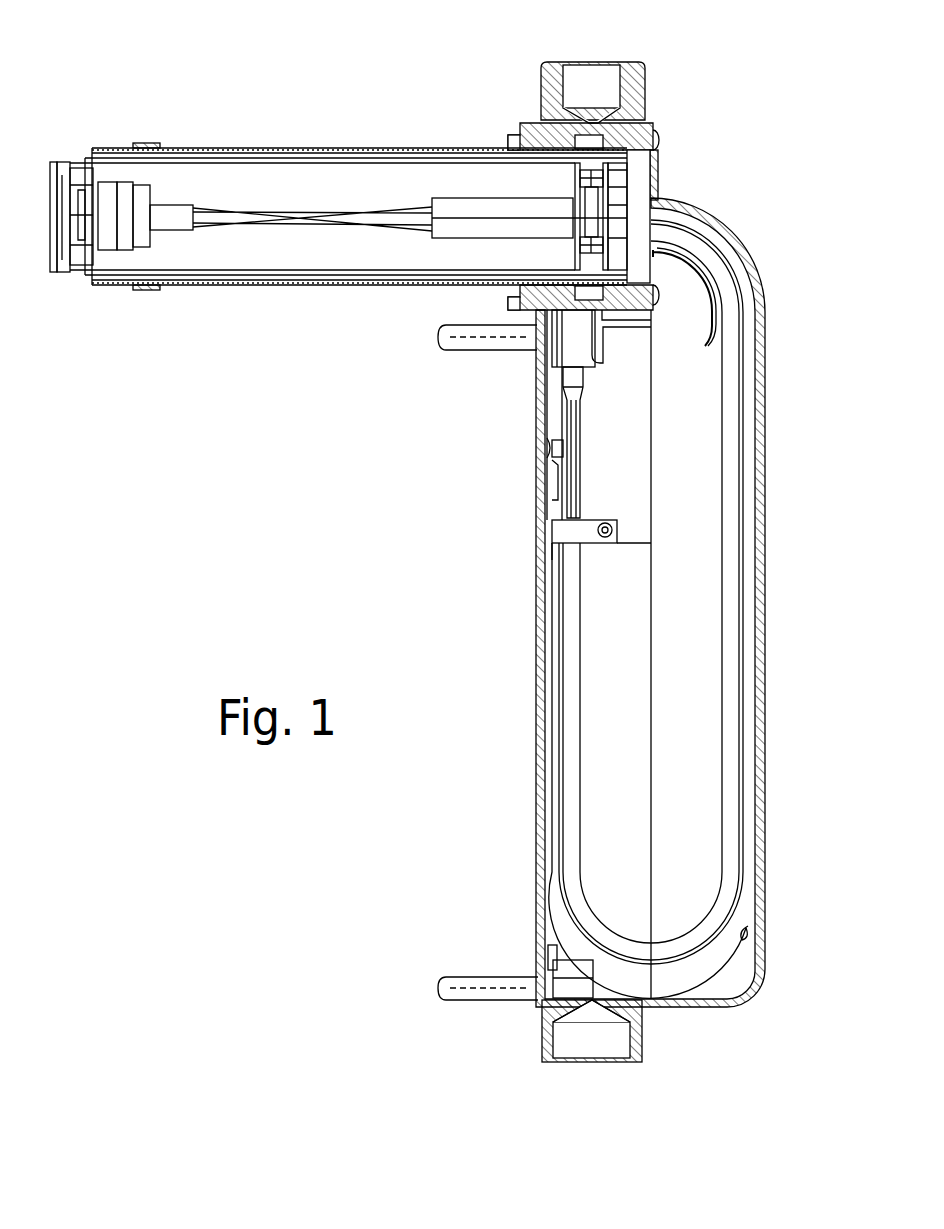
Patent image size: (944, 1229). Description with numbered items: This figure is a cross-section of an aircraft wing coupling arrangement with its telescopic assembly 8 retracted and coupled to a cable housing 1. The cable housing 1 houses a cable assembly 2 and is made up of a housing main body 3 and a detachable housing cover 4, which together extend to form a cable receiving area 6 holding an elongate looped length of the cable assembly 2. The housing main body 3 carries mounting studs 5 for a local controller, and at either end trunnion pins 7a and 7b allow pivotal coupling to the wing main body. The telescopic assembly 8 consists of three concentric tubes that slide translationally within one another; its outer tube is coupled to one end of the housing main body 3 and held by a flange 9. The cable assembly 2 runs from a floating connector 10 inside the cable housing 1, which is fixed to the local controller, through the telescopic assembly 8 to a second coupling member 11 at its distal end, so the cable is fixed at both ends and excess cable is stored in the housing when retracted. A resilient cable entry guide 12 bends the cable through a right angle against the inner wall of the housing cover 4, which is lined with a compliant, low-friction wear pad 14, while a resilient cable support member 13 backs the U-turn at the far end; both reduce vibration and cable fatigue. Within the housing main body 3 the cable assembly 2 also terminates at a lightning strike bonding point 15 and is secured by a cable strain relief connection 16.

The cable housing 1 is at (748, 1015).
The cable assembly 2 is at (703, 222).
The housing main body 3 is at (534, 768).
The housing cover 4 is at (768, 794).
The mounting studs 5 is at (438, 985).
The cable receiving area 6 is at (696, 538).
The trunnion pin 7a is at (541, 1040).
The trunnion pin 7b is at (556, 66).
The telescopic assembly 8 is at (280, 147).
The flange 9 is at (521, 131).
The floating connector 10 is at (567, 348).
The second coupling member 11 is at (108, 186).
The cable entry guide 12 is at (718, 336).
The cable support member 13 is at (760, 922).
The compliant wear pad 14 is at (763, 420).
The lightning strike bonding point 15 is at (543, 450).
The cable strain relief connection 16 is at (565, 533).